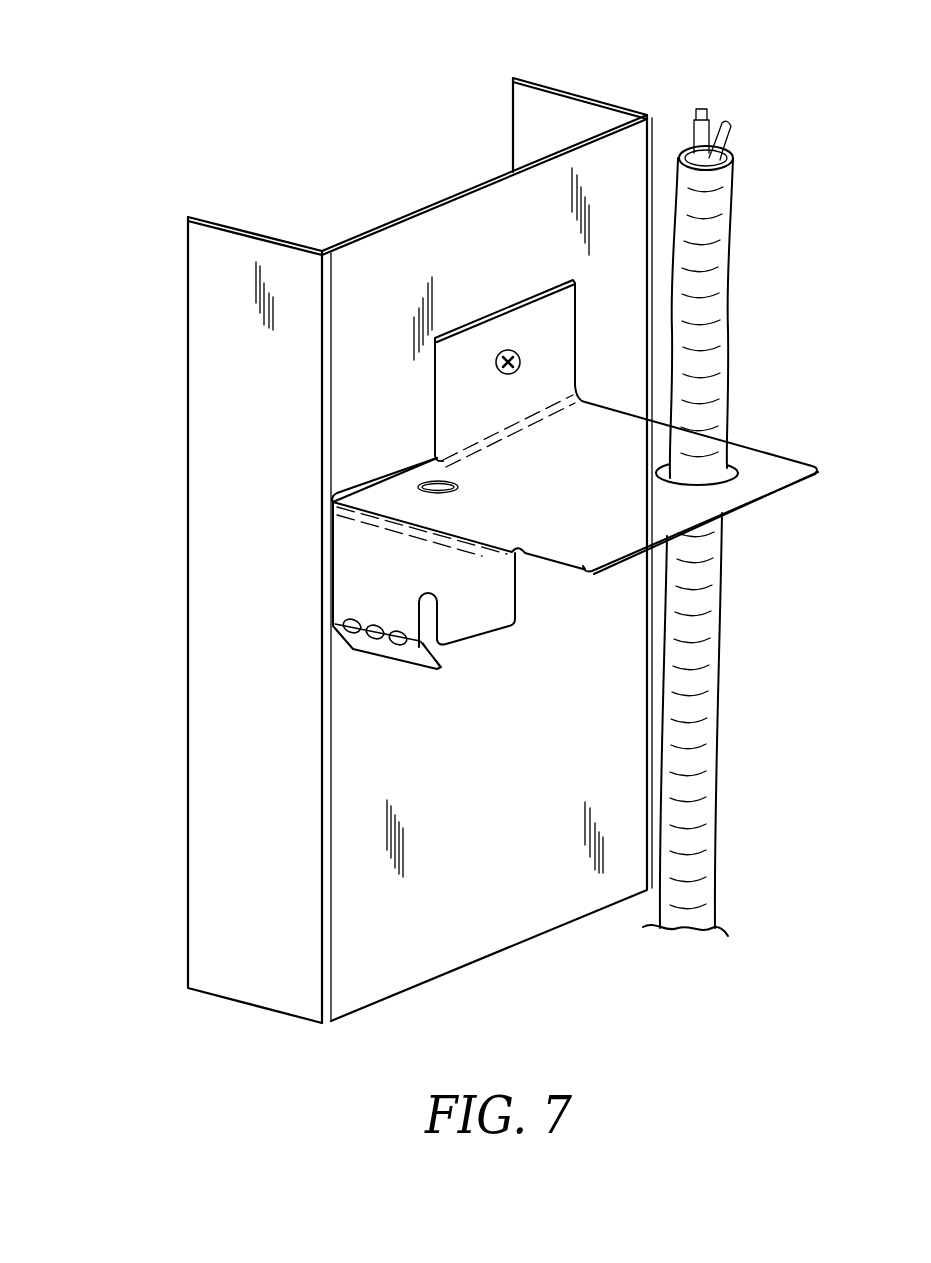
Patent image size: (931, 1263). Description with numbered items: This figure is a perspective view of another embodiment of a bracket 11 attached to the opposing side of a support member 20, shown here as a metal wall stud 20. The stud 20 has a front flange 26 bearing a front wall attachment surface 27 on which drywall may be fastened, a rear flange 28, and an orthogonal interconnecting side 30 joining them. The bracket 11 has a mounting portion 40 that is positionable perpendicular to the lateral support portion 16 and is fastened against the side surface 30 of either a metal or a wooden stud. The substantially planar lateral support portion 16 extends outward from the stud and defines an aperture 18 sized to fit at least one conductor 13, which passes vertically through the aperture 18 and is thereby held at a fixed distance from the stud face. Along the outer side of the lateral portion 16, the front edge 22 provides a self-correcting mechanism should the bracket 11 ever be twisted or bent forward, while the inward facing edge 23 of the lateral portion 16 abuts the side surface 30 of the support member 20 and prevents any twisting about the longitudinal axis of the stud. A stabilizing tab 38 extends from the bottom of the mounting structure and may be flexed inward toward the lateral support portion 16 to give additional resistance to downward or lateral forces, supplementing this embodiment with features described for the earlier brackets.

The bracket 11 is at (475, 443).
The conductor 13 is at (713, 310).
The lateral support portion 16 is at (476, 479).
The aperture 18 is at (727, 462).
The support member 20 is at (368, 523).
The front edge 22 is at (311, 611).
The inward facing edge 23 is at (385, 478).
The front flange 26 is at (244, 569).
The front wall attachment surface 27 is at (222, 523).
The rear flange 28 is at (568, 108).
The interconnecting side 30 is at (472, 213).
The stabilizing tab 38 is at (382, 648).
The mounting portion 40 is at (473, 343).